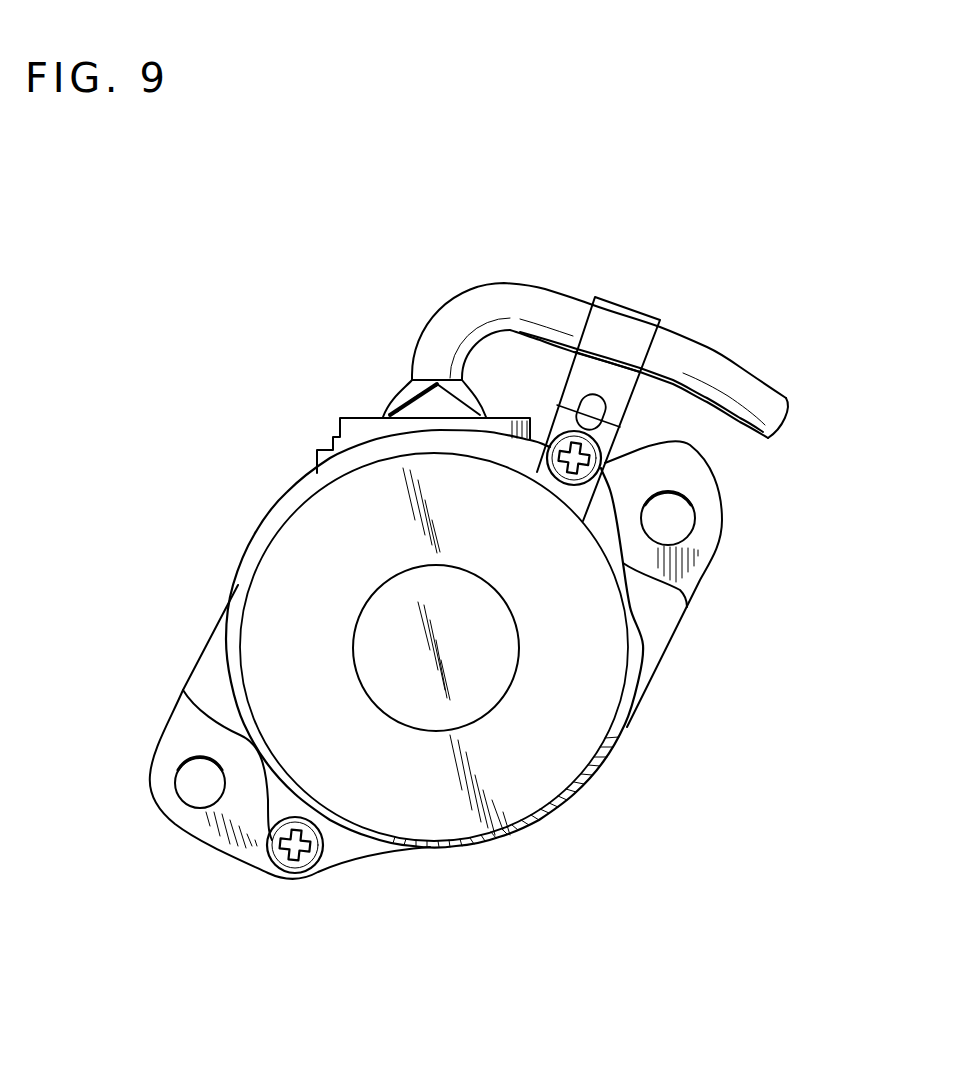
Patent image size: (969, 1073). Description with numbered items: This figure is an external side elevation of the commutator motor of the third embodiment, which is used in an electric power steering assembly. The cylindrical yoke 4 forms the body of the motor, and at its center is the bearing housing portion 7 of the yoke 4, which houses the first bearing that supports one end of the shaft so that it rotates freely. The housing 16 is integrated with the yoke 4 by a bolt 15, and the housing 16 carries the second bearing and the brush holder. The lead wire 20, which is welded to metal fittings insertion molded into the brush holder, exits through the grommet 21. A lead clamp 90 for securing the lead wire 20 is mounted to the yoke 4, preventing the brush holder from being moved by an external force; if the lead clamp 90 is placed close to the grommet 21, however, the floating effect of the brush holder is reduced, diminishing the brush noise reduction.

The yoke 4 is at (572, 753).
The bearing housing portion 7 is at (493, 675).
The bolt 15 is at (586, 464).
The housing 16 is at (703, 543).
The lead wire 20 is at (747, 383).
The grommet 21 is at (358, 417).
The lead clamp 90 is at (628, 323).